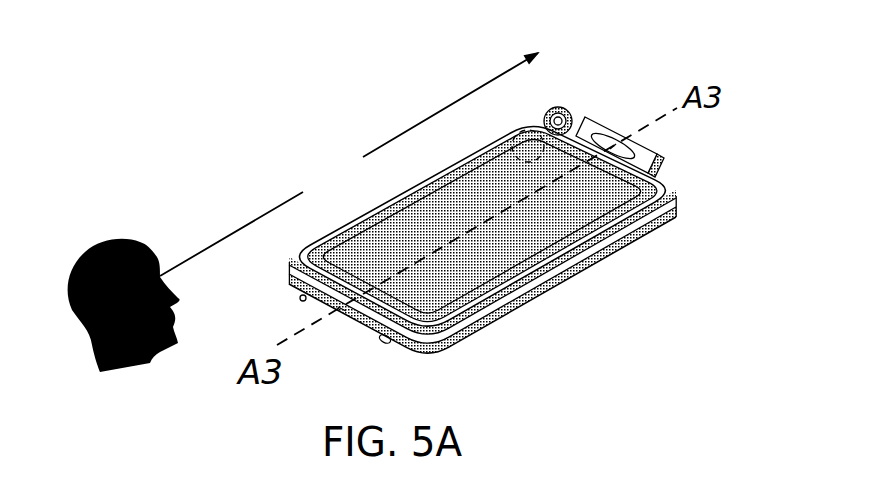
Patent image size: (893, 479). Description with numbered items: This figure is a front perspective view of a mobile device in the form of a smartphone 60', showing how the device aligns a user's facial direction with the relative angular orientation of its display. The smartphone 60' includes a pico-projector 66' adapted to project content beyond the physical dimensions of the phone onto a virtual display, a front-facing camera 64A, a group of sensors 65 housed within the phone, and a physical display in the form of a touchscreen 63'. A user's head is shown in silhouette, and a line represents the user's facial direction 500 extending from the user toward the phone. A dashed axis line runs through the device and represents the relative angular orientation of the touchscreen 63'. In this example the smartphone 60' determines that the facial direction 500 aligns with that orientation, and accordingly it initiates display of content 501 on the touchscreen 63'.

The user's facial direction 500 is at (349, 164).
The content 501 is at (516, 228).
The smartphone 60' is at (513, 235).
The touchscreen 63' is at (524, 226).
The front-facing camera 64A is at (566, 113).
The group of sensors 65 is at (533, 124).
The pico-projector 66' is at (624, 124).